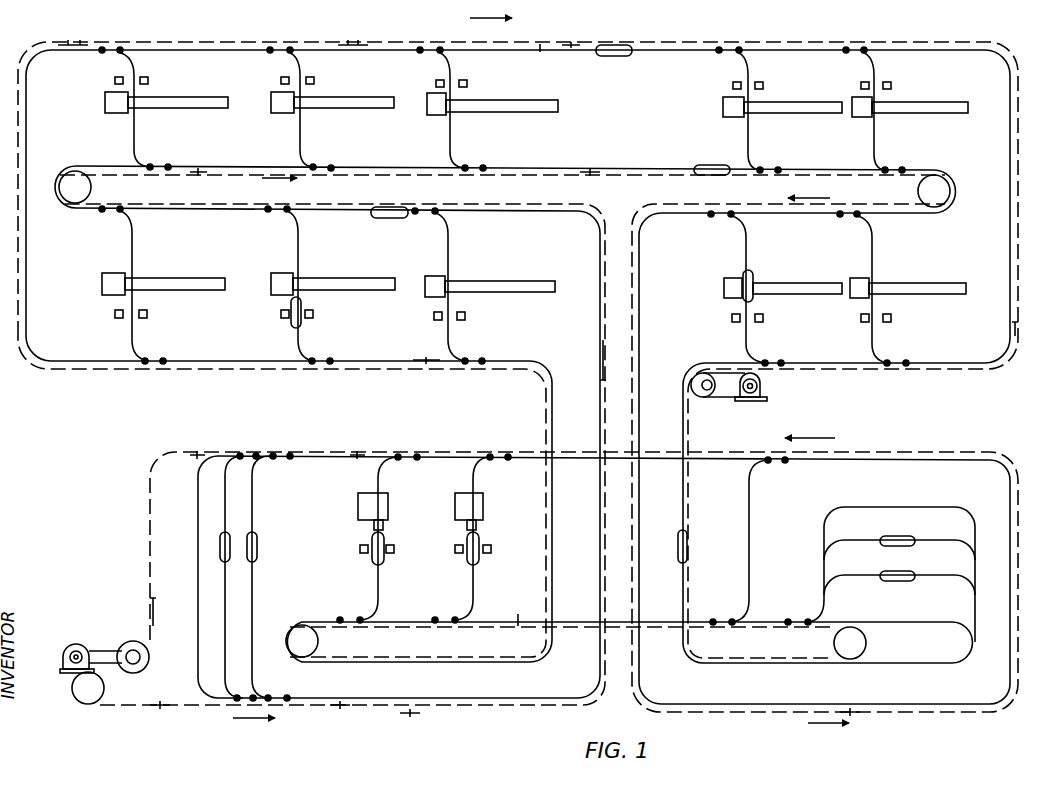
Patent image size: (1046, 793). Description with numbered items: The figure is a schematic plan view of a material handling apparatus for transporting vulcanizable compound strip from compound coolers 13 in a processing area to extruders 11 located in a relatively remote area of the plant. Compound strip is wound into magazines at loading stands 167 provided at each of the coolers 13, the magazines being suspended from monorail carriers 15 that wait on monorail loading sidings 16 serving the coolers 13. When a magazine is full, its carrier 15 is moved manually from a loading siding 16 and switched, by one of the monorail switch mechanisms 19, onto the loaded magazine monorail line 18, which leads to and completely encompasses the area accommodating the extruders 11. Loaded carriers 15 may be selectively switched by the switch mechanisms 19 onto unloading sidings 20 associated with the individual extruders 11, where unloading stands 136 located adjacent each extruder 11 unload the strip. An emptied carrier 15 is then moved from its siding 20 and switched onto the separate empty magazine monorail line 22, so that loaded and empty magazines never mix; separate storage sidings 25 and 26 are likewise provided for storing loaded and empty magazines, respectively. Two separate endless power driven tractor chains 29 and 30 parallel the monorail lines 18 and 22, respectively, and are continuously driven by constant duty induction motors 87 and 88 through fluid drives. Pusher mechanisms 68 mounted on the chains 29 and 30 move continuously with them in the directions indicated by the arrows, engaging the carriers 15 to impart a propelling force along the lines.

The extruder 11 is at (118, 113).
The compound cooler 13 is at (357, 502).
The monorail carrier 15 is at (605, 58).
The monorail loading siding 16 is at (379, 592).
The loaded magazine monorail line 18 is at (540, 53).
The monorail switch mechanism 19 is at (420, 53).
The unloading siding 20 is at (450, 132).
The empty magazine monorail line 22 is at (612, 165).
The monorail storage siding for loaded magazines 25 is at (950, 578).
The monorail storage siding for empty magazines 26 is at (226, 590).
The tractor chain 29 is at (666, 44).
The tractor chain 30 is at (604, 178).
The pusher mechanism 68 is at (78, 39).
The induction motor 87 is at (765, 390).
The induction motor 88 is at (72, 645).
The unloading stand 136 is at (149, 80).
The loading stand 167 is at (360, 552).